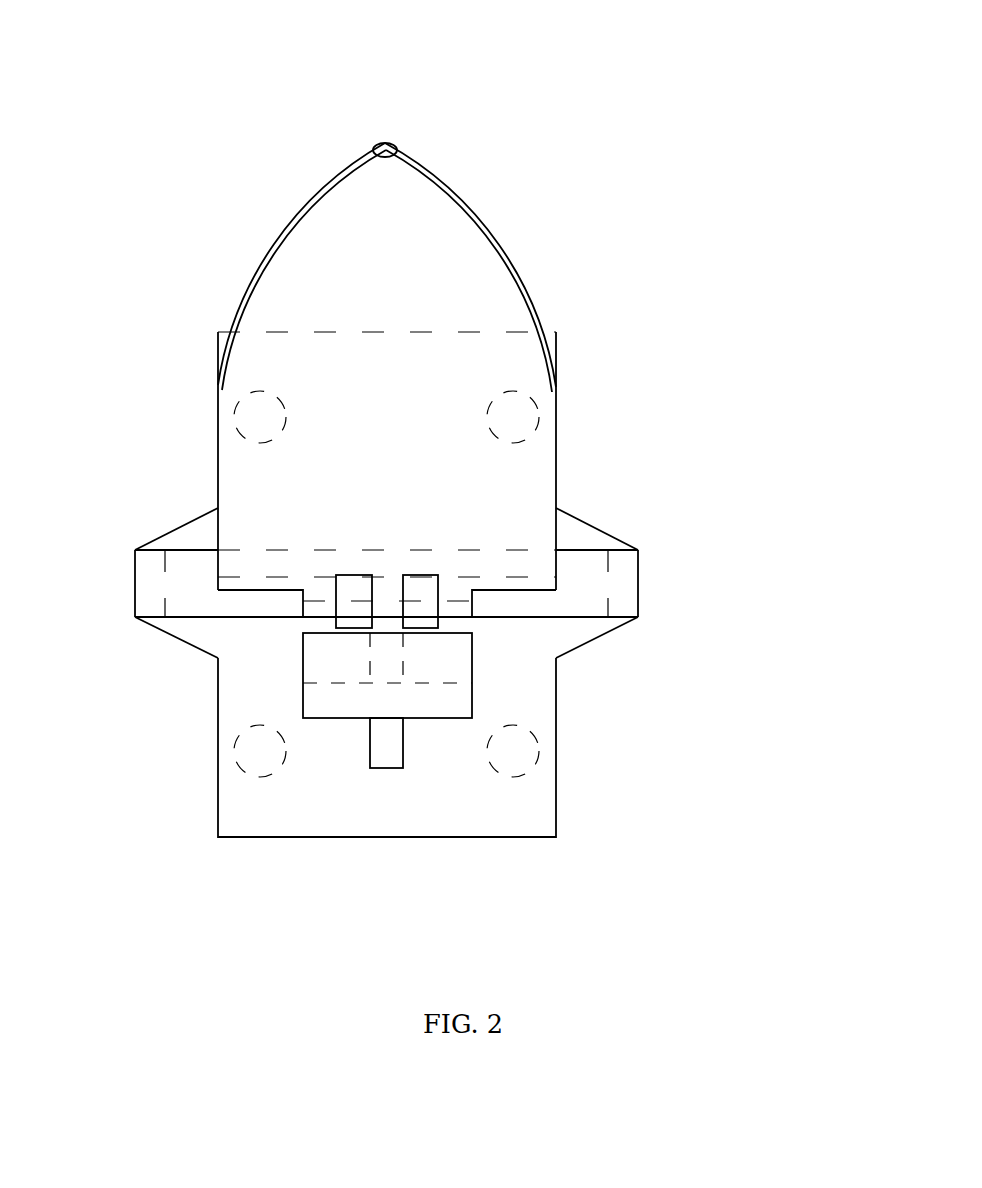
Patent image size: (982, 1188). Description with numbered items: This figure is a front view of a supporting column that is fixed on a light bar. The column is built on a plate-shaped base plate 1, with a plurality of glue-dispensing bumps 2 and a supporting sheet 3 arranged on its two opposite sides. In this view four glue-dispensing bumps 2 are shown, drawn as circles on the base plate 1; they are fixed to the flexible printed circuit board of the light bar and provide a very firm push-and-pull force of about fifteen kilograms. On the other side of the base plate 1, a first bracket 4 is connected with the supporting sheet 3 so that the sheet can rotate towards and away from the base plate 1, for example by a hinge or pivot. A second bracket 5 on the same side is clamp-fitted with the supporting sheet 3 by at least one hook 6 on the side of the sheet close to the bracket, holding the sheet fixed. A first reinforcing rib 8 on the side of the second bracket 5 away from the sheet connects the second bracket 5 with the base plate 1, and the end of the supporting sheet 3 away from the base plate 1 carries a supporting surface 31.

The base plate 1 is at (540, 813).
The glue-dispensing bumps 2 is at (260, 407).
The supporting sheet 3 is at (437, 277).
The supporting surface 31 is at (397, 146).
The first bracket 4 is at (592, 573).
The second bracket 5 is at (440, 675).
The hook 6 is at (362, 612).
The first reinforcing rib 8 is at (388, 737).